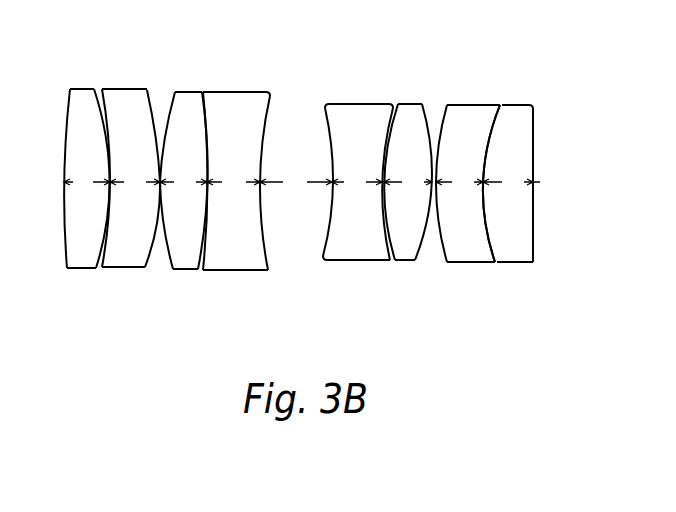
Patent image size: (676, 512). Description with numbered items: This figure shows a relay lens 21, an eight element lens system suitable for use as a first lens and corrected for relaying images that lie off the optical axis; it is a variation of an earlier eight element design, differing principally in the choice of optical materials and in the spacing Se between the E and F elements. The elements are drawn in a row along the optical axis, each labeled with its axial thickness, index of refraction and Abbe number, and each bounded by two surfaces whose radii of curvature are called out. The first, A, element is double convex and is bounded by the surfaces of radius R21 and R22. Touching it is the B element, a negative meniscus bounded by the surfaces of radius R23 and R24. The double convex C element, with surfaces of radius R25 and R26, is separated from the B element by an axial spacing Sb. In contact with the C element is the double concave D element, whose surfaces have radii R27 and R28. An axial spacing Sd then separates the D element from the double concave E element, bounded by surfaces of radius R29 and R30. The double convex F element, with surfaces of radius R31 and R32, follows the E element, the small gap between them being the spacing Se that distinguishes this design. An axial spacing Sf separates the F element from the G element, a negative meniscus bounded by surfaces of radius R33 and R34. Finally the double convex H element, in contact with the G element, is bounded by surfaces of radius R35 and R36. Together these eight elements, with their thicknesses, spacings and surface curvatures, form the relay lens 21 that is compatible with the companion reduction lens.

The relay lens 21 is at (603, 362).
The radius of curvature R21 is at (48, 160).
The radius of curvature R22 is at (100, 159).
The radius of curvature R23 is at (96, 203).
The radius of curvature R24 is at (144, 203).
The radius of curvature R25 is at (188, 161).
The radius of curvature R26 is at (230, 161).
The radius of curvature R27 is at (212, 205).
The radius of curvature R28 is at (285, 205).
The radius of curvature R29 is at (332, 154).
The radius of curvature R30 is at (384, 157).
The radius of curvature R31 is at (406, 208).
The radius of curvature R32 is at (441, 208).
The radius of curvature R33 is at (465, 157).
The radius of curvature R34 is at (520, 160).
The radius of curvature R35 is at (510, 211).
The radius of curvature R36 is at (559, 206).
The axial spacing Sb is at (148, 109).
The axial spacing Sd is at (296, 184).
The spacing Se is at (369, 269).
The axial spacing Sf is at (435, 113).